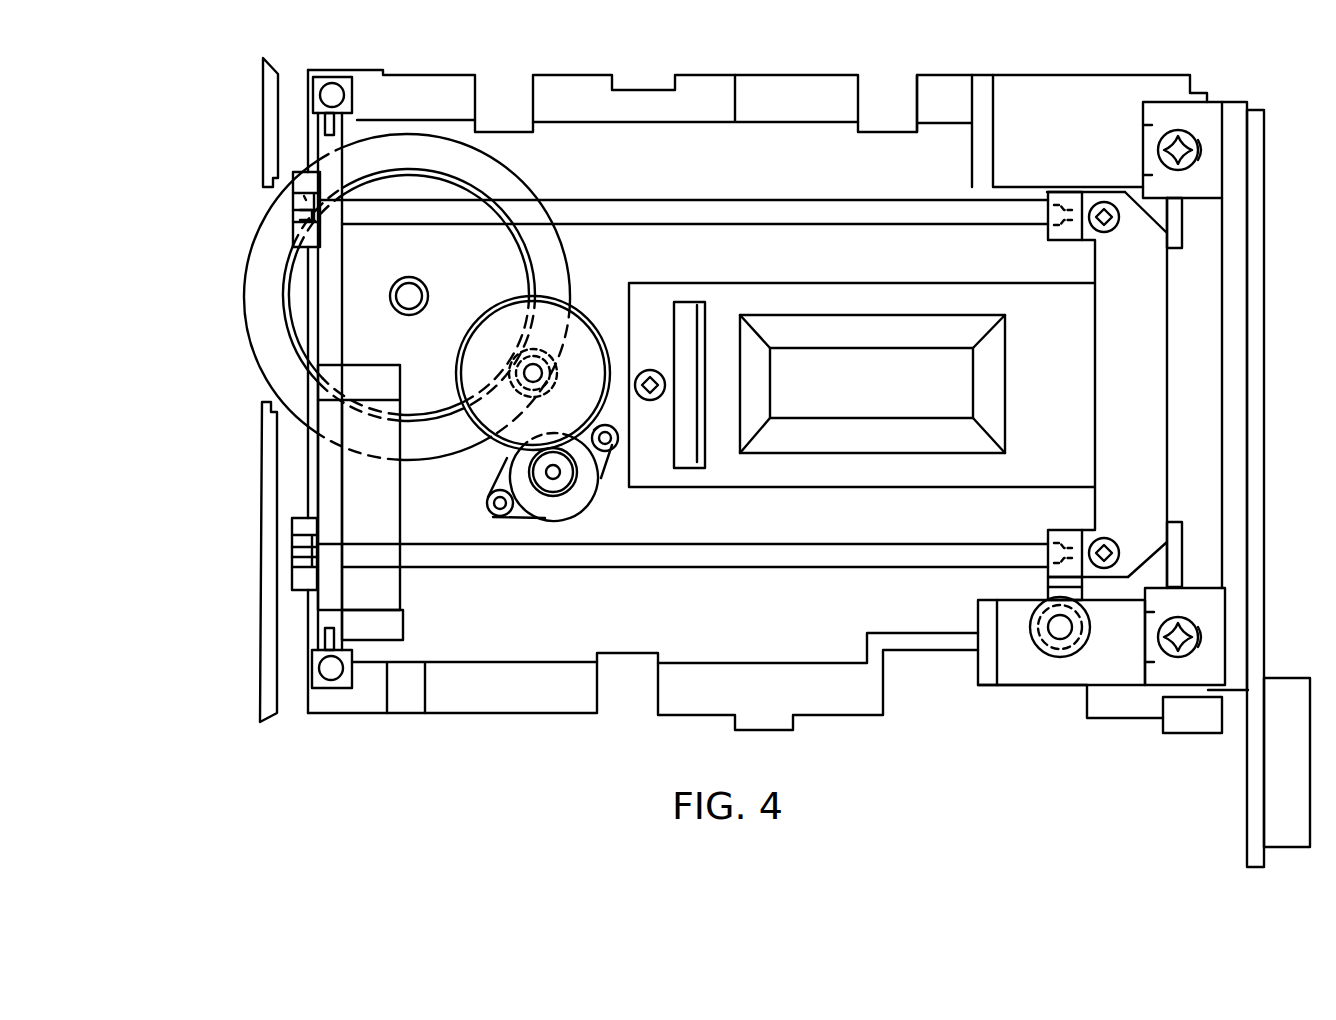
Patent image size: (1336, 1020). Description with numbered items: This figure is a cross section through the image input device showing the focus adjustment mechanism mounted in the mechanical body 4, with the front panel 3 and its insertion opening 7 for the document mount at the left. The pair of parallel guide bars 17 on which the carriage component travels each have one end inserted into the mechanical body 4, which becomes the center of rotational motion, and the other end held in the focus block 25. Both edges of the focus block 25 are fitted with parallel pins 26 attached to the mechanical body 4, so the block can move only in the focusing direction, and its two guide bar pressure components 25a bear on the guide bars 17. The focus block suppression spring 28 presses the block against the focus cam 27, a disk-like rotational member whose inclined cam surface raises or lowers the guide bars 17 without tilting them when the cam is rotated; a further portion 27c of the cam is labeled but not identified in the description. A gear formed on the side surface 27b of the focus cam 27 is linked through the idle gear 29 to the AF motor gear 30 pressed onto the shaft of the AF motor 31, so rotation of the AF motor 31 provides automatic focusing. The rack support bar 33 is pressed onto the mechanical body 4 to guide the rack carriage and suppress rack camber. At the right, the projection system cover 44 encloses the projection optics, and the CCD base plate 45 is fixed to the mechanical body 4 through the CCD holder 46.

The front panel 3 is at (268, 102).
The mechanical body 4 is at (705, 642).
The insertion opening 7 is at (940, 560).
The guide bars 17 is at (940, 207).
The focus block 25 is at (320, 465).
The guide bar pressure components 25a is at (300, 222).
The parallel pins 26 is at (332, 92).
The focus cam 27 is at (432, 188).
The side surface of the focus cam 27b is at (287, 332).
The drive wheel block 27c is at (262, 226).
The focus block suppression spring 28 is at (352, 492).
The idle gear 29 is at (583, 340).
The AF motor gear 30 is at (556, 486).
The AF motor 31 is at (530, 498).
The rack support bar 33 is at (1047, 657).
The projection system cover 44 is at (1150, 350).
The CCD base plate 45 is at (1265, 268).
The CCD holder 46 is at (1200, 428).